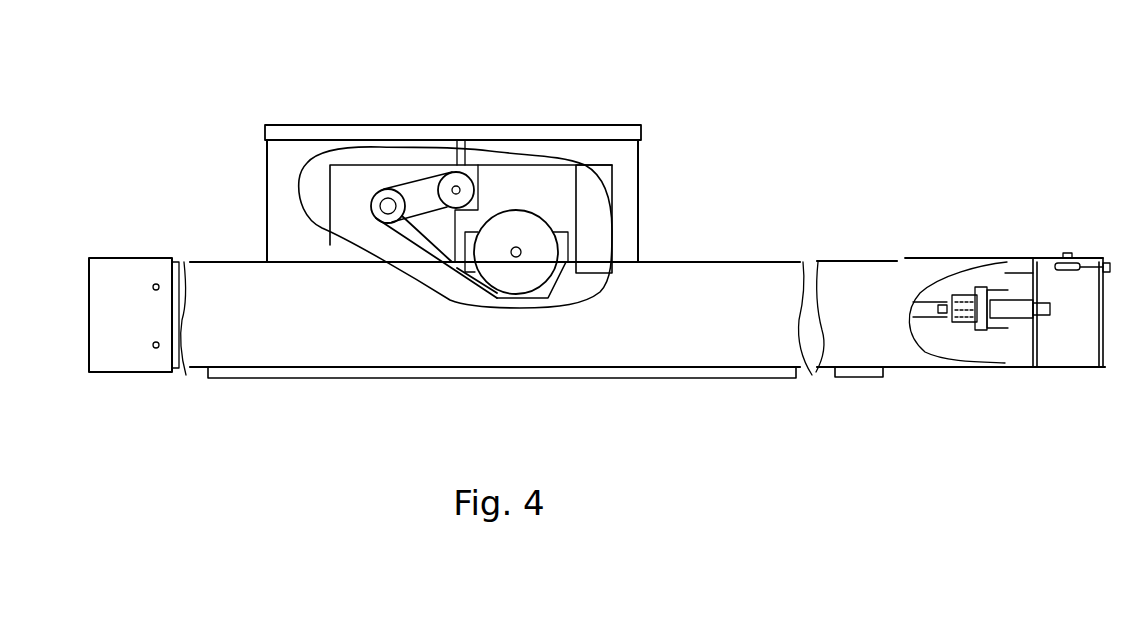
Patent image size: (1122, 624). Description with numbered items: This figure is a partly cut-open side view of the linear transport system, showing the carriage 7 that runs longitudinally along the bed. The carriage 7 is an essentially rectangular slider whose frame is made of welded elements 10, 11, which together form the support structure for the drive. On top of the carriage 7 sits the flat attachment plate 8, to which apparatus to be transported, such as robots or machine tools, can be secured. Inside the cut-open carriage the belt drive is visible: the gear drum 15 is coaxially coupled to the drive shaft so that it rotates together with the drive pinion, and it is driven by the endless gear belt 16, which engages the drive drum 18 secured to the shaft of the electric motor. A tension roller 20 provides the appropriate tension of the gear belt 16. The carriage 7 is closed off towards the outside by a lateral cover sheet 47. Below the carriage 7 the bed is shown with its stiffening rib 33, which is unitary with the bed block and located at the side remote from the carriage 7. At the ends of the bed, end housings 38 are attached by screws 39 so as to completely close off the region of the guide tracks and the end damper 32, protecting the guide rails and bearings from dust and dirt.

The carriage 7 is at (266, 200).
The attachment plate 8 is at (605, 132).
The welded element 10 is at (423, 158).
The welded element 11 is at (303, 206).
The gear drum 15 is at (378, 199).
The gear belt 16 is at (410, 245).
The drive drum 18 is at (517, 229).
The tension roller 20 is at (476, 187).
The end damper 32 is at (990, 330).
The stiffening rib 33 is at (300, 379).
The end housing 38 is at (123, 295).
The screws 39 is at (156, 348).
The lateral cover sheet 47 is at (622, 175).